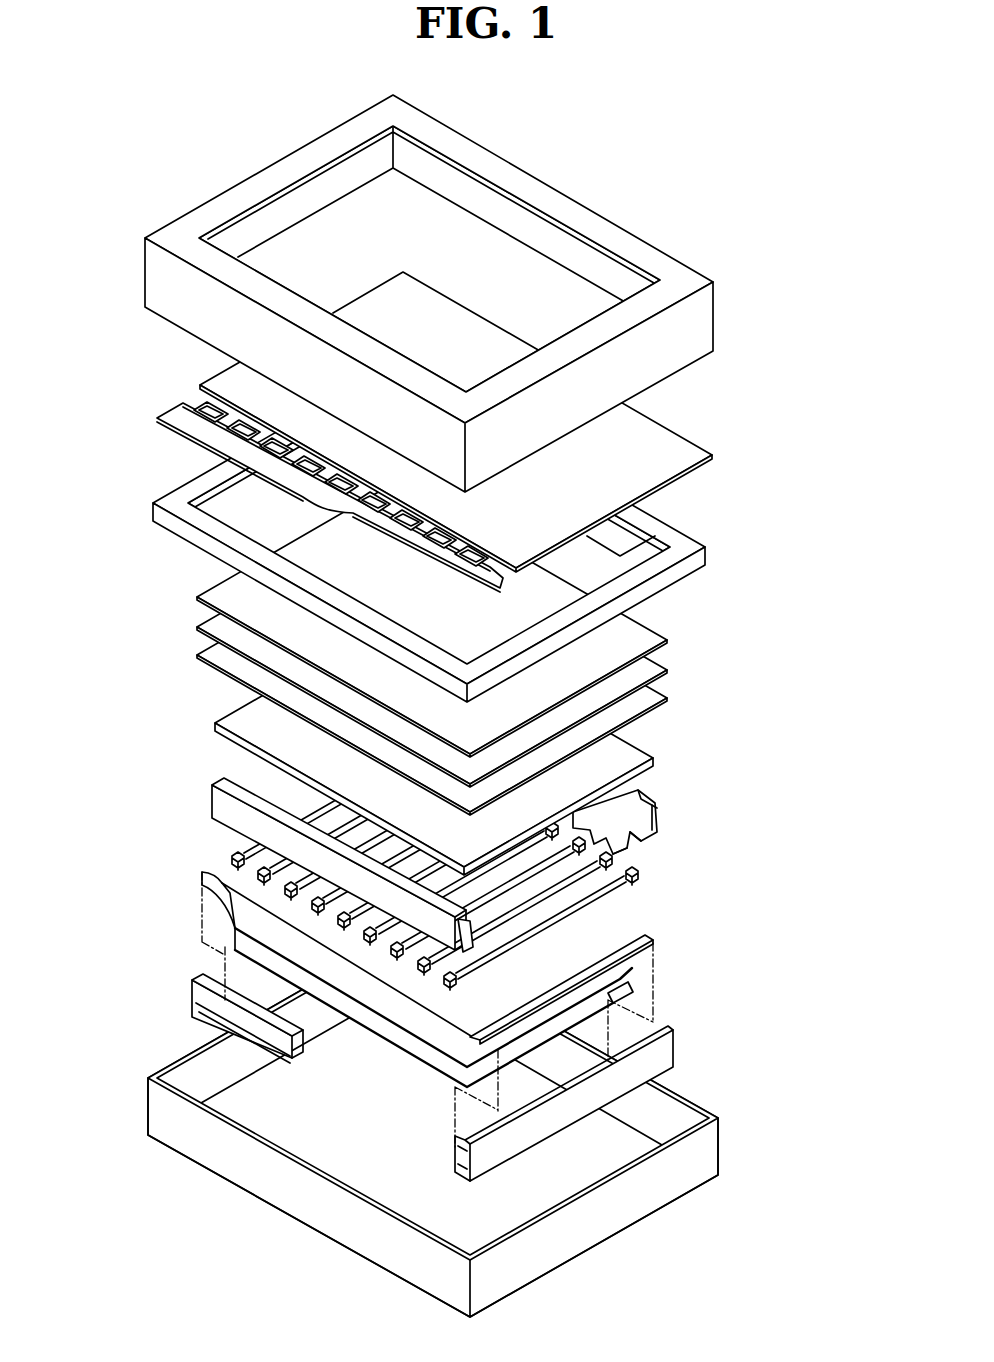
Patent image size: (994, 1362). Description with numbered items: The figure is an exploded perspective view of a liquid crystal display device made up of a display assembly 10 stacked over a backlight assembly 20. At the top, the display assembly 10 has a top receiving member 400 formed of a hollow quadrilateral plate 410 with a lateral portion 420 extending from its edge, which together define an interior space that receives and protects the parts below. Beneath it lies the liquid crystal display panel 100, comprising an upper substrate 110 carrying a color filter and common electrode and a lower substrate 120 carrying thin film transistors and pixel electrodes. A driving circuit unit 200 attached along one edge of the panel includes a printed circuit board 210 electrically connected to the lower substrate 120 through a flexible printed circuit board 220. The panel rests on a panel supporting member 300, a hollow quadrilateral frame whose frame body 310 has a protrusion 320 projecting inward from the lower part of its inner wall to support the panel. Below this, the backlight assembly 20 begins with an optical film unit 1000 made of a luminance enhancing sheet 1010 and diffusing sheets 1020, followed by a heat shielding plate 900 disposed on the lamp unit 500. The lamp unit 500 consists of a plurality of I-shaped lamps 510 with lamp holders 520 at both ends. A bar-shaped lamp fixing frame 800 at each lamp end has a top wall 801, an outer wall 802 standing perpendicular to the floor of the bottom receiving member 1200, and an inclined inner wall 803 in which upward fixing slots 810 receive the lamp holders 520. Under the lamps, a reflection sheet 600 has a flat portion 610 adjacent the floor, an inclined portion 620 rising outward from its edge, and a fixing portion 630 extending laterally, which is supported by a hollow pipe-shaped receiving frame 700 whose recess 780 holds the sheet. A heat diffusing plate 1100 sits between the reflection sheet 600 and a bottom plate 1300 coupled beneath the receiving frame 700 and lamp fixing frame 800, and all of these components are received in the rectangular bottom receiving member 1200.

The display assembly 10 is at (466, 398).
The backlight assembly 20 is at (490, 900).
The liquid crystal display panel 100 is at (532, 422).
The upper substrate 110 is at (683, 444).
The lower substrate 120 is at (713, 450).
The driving circuit unit 200 is at (260, 480).
The printed circuit board 210 is at (170, 408).
The flexible printed circuit board 220 is at (193, 398).
The panel supporting member 300 is at (508, 534).
The frame body 310 is at (706, 553).
The protrusion 320 is at (637, 548).
The top receiving member 400 is at (504, 293).
The quadrilateral plate 410 is at (690, 277).
The lateral portion 420 is at (703, 313).
The lamp unit 500 is at (512, 868).
The lamps 510 is at (622, 898).
The lamp holders 520 is at (637, 870).
The reflection sheet 600 is at (353, 933).
The flat portion 610 is at (224, 921).
The inclined portion 620 is at (206, 899).
The fixing portion 630 is at (202, 872).
The receiving frame 700 is at (672, 1052).
The recess 780 is at (203, 1003).
The lamp fixing frame 800 is at (518, 865).
The top wall 801 is at (652, 795).
The outer wall 802 is at (656, 822).
The inner wall 803 is at (655, 838).
The fixing slot 810 is at (635, 848).
The heat shielding plate 900 is at (655, 762).
The optical film unit 1000 is at (526, 649).
The luminance enhancing sheet 1010 is at (662, 642).
The diffusing sheet 1020 is at (657, 672).
The heat diffusing plate 1100 is at (620, 977).
The bottom receiving member 1200 is at (713, 1156).
The bottom plate 1300 is at (634, 993).